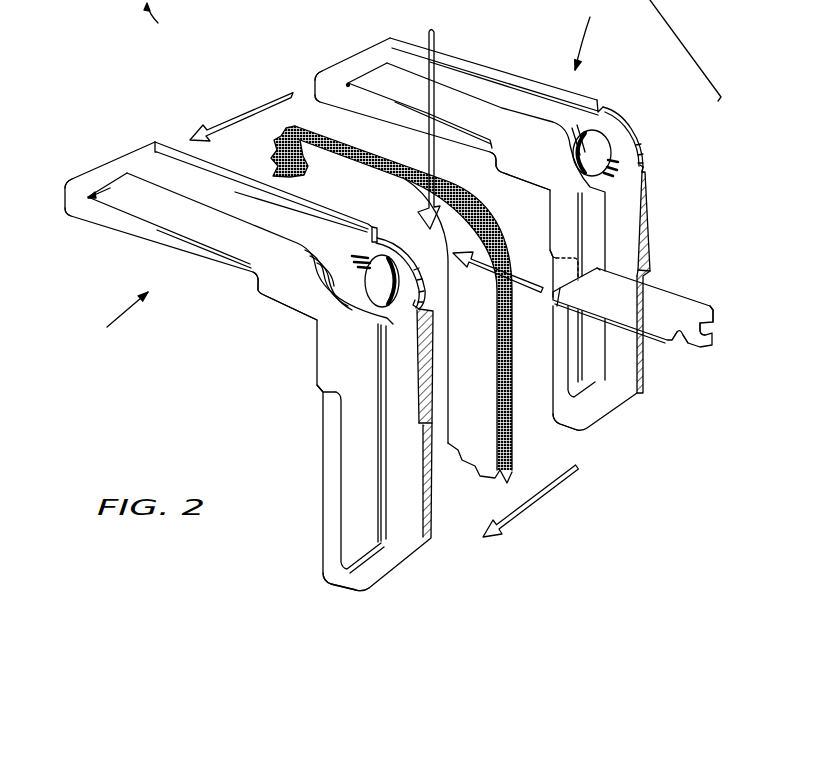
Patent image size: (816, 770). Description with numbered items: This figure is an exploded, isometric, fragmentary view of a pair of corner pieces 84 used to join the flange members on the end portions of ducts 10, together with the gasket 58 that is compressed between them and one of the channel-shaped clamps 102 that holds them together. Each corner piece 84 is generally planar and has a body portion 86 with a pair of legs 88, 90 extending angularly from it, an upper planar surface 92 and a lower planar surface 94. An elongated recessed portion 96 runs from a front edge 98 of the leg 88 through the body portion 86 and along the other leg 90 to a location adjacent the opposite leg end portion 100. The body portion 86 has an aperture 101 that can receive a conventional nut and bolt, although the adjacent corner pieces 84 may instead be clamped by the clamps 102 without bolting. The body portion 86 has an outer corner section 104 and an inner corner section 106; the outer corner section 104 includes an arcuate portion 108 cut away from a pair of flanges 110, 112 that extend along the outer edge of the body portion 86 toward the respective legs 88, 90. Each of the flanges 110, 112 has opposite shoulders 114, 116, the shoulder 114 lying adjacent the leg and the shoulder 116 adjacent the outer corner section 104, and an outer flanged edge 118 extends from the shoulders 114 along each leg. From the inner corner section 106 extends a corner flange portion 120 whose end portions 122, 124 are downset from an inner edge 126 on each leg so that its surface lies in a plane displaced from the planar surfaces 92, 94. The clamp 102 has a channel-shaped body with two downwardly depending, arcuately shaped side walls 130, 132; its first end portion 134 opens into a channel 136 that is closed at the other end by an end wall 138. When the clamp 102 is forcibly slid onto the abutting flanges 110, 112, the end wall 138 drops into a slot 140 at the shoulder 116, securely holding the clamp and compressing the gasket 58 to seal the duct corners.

The duct 10 is at (160, 20).
The gasket 58 is at (295, 138).
The corner piece 84 is at (347, 174).
The body portion 86 is at (278, 256).
The leg 88 is at (142, 165).
The leg 90 is at (400, 523).
The upper planar surface 92 is at (400, 117).
The lower planar surface 94 is at (147, 235).
The recessed portion 96 is at (88, 198).
The front edge 98 is at (63, 192).
The leg end portion 100 is at (358, 580).
The aperture 101 is at (370, 285).
The clamp 102 is at (660, 283).
The outer corner section 104 is at (410, 292).
The inner corner section 106 is at (332, 312).
The arcuate portion 108 is at (403, 253).
The flange 110 is at (297, 202).
The flange 112 is at (433, 347).
The shoulder 114 is at (267, 192).
The shoulder 116 is at (373, 228).
The outer flanged edge 118 is at (188, 163).
The corner flange portion 120 is at (288, 298).
The end portion 122 is at (247, 285).
The end portion 124 is at (327, 397).
The inner edge 126 is at (110, 228).
The side wall 130 is at (707, 307).
The side wall 132 is at (668, 340).
The first end portion 134 is at (560, 290).
The channel 136 is at (680, 345).
The end wall 138 is at (687, 340).
The slot 140 is at (370, 246).